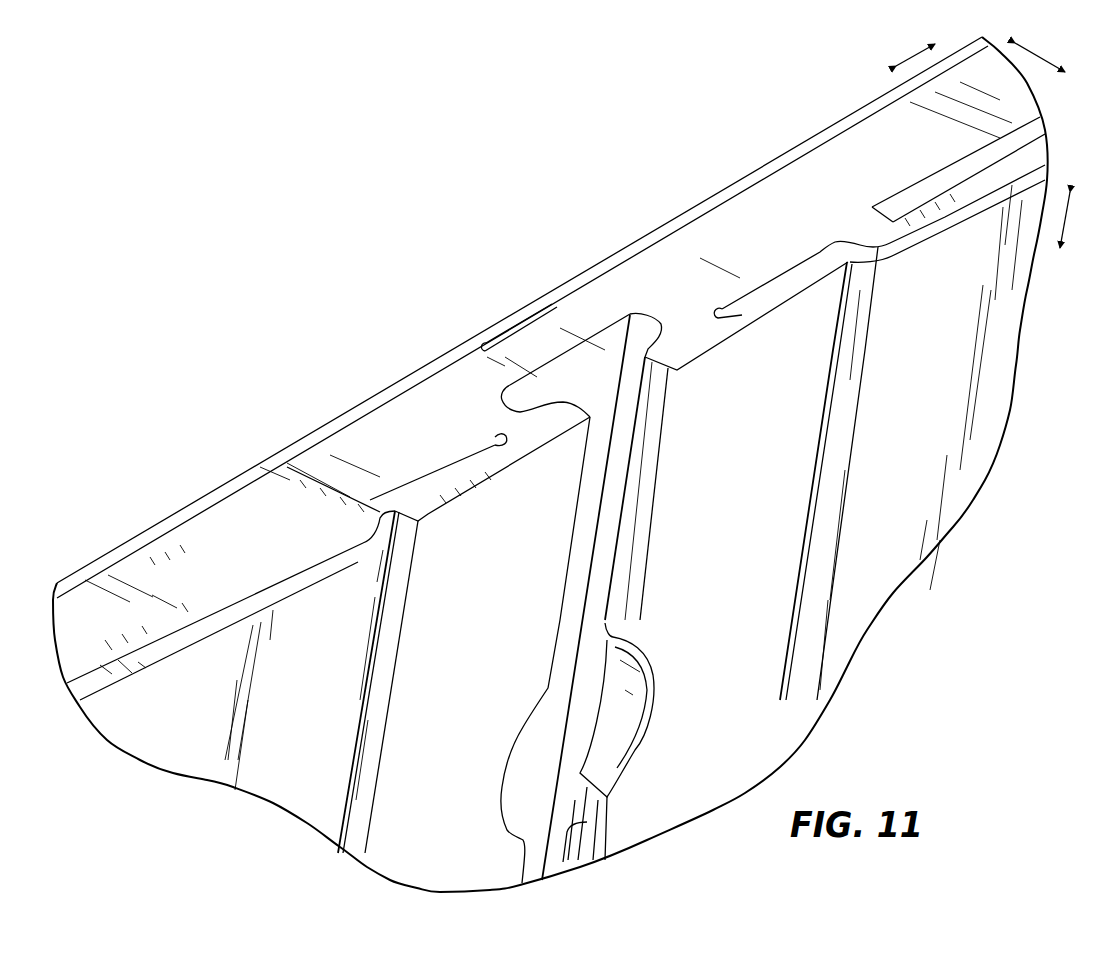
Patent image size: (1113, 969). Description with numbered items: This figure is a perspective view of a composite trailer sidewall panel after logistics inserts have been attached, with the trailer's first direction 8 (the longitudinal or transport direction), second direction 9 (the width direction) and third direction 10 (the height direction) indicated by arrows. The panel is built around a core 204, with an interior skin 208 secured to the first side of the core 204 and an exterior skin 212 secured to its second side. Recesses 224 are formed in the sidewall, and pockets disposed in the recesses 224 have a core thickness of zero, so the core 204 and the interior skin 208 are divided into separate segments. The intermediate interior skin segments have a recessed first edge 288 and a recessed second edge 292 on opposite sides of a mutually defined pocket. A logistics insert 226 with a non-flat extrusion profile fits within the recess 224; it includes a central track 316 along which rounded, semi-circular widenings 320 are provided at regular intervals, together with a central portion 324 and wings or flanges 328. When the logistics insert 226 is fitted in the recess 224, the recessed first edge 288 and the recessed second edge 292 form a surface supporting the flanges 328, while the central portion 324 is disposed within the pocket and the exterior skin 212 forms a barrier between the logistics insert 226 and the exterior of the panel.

The first direction 8 is at (918, 55).
The second direction 9 is at (1040, 56).
The third direction 10 is at (1067, 214).
The core 204 is at (730, 243).
The interior skin 208 is at (266, 466).
The exterior skin 212 is at (808, 142).
The recess 224 is at (452, 472).
The logistics insert 226 is at (573, 332).
The recessed first edge 288 is at (412, 485).
The recessed second edge 292 is at (797, 267).
The central track 316 is at (552, 877).
The rounded widenings 320 is at (640, 752).
The central portion 324 is at (552, 387).
The wings or flanges 328 is at (743, 318).